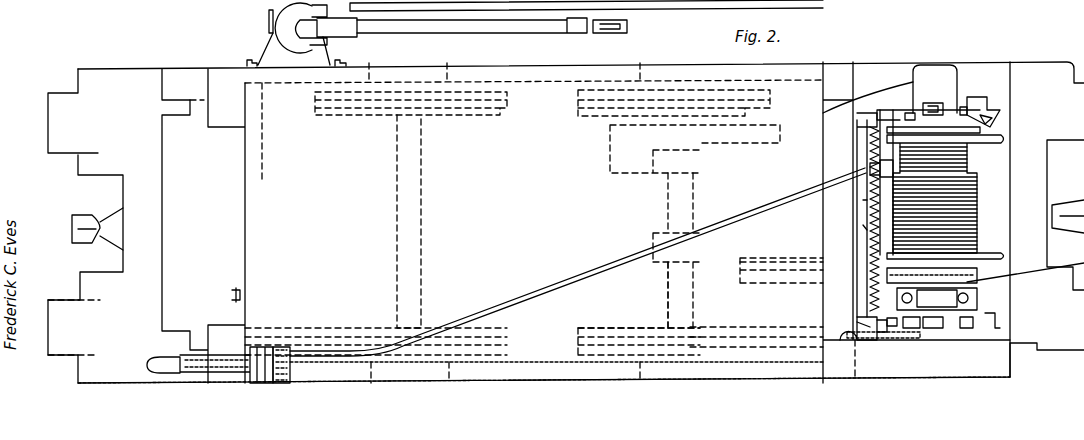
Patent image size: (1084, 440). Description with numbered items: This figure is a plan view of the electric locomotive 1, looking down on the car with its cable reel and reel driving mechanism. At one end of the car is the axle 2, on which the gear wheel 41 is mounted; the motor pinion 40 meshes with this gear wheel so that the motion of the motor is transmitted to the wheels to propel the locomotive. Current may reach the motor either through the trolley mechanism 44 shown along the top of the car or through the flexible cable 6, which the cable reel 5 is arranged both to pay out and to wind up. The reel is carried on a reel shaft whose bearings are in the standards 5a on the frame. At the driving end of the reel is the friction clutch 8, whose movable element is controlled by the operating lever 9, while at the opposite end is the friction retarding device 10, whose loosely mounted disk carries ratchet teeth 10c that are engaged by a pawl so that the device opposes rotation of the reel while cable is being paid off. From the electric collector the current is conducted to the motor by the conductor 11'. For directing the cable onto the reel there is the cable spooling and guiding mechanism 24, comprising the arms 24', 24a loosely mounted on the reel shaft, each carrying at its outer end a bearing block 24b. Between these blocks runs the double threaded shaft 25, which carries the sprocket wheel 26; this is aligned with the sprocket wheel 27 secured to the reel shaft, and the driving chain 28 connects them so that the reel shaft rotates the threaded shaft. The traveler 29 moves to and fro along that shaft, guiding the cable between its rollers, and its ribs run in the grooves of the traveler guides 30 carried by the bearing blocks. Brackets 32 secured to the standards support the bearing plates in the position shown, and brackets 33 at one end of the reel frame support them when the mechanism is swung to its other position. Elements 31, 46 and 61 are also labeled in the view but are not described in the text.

The electric locomotive 1 is at (536, 353).
The axle 2 is at (677, 290).
The cable reel 5 is at (977, 190).
The standards 5a is at (967, 110).
The flexible cable 6 is at (735, 222).
The friction clutch 8 is at (970, 283).
The operating lever 9 is at (983, 303).
The friction retarding device 10 is at (990, 130).
The ratchet teeth 10c is at (923, 113).
The conductor 11' is at (872, 69).
The cable spooling and guiding mechanism 24 is at (841, 213).
The arm 24' is at (819, 318).
The arm 24a is at (913, 113).
The bearing block 24b is at (840, 122).
The double threaded shaft 25 is at (863, 227).
The sprocket wheel 26 is at (852, 340).
The sprocket wheel 27 is at (823, 270).
The driving chain 28 is at (880, 335).
The traveler 29 is at (877, 180).
The traveler guides 30 is at (863, 203).
The base plate 31 is at (947, 333).
The brackets 32 is at (987, 117).
The brackets 33 is at (893, 117).
The motor pinion 40 is at (770, 108).
The gear wheel 41 is at (620, 140).
The trolley mechanism 44 is at (445, 28).
The slider block 46 is at (290, 347).
The slide rod 61 is at (233, 350).